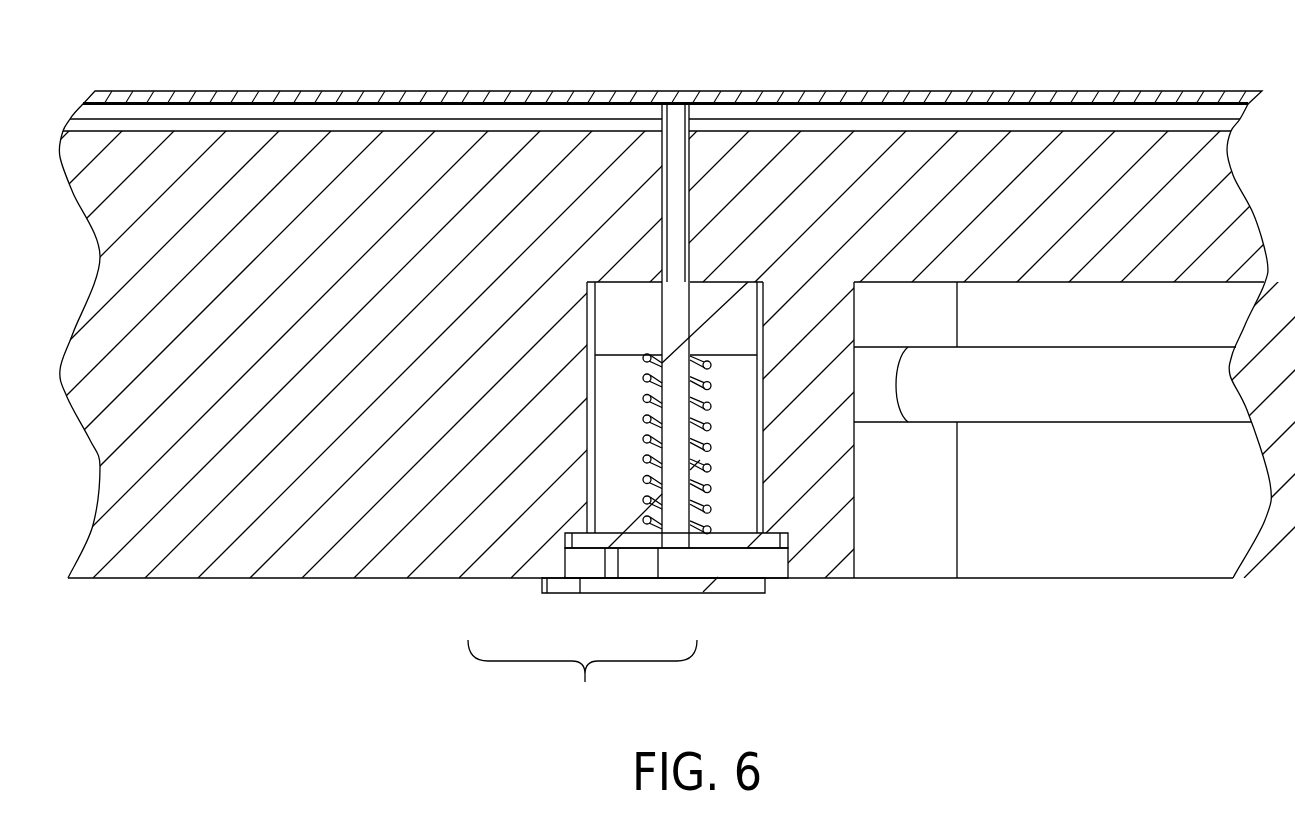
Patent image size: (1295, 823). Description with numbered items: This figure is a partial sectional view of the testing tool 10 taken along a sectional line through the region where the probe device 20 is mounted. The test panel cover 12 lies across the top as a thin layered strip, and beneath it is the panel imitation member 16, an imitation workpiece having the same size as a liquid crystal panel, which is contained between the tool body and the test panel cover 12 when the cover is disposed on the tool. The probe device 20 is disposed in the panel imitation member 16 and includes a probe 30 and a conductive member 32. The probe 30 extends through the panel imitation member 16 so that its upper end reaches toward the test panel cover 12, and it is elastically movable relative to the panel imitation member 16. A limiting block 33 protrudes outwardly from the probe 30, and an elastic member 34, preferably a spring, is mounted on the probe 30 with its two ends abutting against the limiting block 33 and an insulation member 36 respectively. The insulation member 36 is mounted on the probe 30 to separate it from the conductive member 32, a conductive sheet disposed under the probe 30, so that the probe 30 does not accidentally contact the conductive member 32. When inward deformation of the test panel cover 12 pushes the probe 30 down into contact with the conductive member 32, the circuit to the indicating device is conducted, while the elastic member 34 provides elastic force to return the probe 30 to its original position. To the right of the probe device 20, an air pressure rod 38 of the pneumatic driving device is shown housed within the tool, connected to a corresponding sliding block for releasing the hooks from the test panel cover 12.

The testing tool 10 is at (815, 598).
The test panel cover 12 is at (838, 91).
The panel imitation member 16 is at (1000, 157).
The probe device 20 is at (582, 680).
The probe 30 is at (667, 198).
The conductive member 32 is at (668, 587).
The limiting block 33 is at (717, 290).
The elastic member 34 is at (647, 500).
The insulation member 36 is at (600, 542).
The air pressure rod 38 is at (1028, 400).